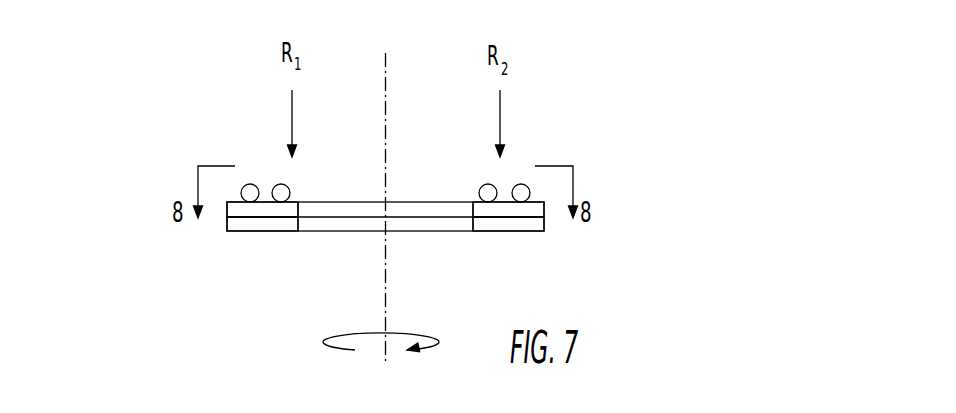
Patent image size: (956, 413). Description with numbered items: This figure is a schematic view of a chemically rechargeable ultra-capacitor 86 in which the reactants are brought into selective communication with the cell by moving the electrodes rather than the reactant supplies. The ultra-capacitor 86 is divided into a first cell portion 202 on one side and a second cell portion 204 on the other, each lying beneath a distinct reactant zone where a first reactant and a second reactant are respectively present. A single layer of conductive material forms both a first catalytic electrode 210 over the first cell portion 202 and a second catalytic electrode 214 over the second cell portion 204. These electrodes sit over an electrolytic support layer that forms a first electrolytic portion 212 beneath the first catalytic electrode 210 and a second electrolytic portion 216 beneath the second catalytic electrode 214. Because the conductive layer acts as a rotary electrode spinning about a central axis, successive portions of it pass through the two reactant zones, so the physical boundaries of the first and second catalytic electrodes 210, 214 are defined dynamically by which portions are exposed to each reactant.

The chemically rechargeable ultra-capacitor 86 is at (590, 62).
The first cell portion 202 is at (217, 128).
The second cell portion 204 is at (556, 137).
The first catalytic electrode 210 is at (242, 210).
The first electrolytic portion 212 is at (275, 227).
The second catalytic electrode 214 is at (528, 210).
The second electrolytic portion 216 is at (496, 227).